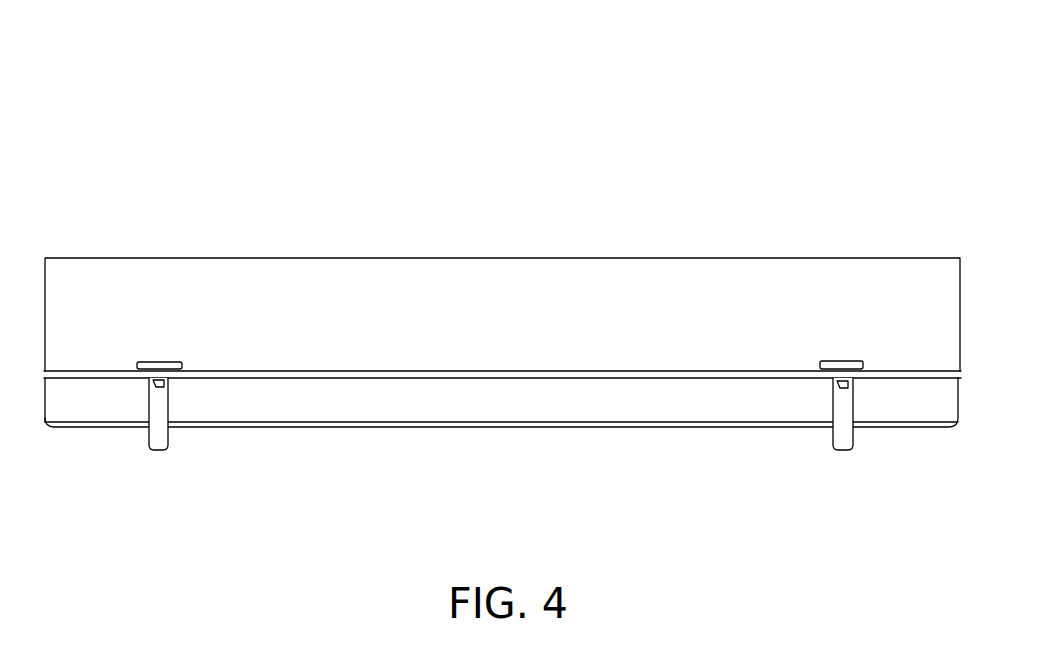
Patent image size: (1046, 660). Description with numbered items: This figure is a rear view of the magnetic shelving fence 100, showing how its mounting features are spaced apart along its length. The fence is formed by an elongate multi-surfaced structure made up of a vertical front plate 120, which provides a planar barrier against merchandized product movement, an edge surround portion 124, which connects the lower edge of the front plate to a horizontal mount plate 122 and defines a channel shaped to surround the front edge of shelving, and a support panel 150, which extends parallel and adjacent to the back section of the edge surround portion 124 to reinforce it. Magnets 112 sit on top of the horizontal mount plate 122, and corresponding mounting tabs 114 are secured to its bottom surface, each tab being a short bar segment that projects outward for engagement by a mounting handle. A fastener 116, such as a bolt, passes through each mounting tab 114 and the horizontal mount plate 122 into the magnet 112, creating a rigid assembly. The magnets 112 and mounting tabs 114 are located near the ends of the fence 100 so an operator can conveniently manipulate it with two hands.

The magnetic shelving fence 100 is at (368, 78).
The magnet 112 is at (161, 361).
The mounting tab 114 is at (157, 438).
The fastener 116 is at (157, 387).
The vertical front plate 120 is at (375, 298).
The horizontal mount plate 122 is at (407, 373).
The edge surround portion 124 is at (720, 428).
The support panel 150 is at (108, 408).